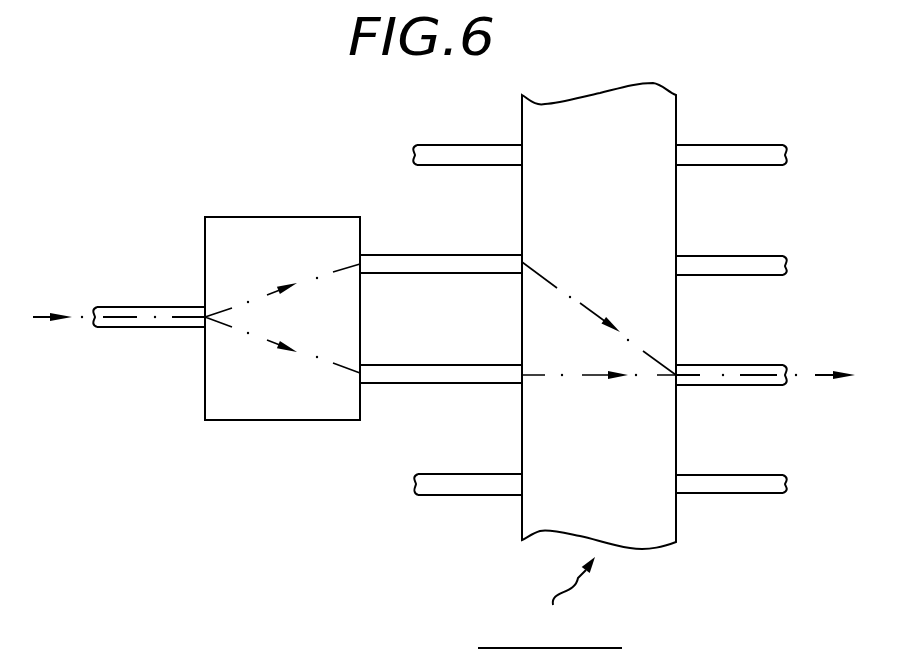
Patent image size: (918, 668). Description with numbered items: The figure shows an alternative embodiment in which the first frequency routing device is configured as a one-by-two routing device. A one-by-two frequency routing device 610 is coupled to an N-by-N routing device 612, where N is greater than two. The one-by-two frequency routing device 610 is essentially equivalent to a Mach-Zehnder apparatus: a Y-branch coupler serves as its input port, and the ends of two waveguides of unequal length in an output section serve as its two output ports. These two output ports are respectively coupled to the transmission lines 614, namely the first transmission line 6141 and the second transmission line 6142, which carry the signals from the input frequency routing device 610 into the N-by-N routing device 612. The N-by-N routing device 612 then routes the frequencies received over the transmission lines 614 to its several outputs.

The 1×2 frequency routing device 610 is at (205, 383).
The N×N routing device 612 is at (678, 117).
The transmission lines 614 is at (441, 291).
The first transmission line 6141 is at (395, 253).
The second transmission line 6142 is at (396, 363).